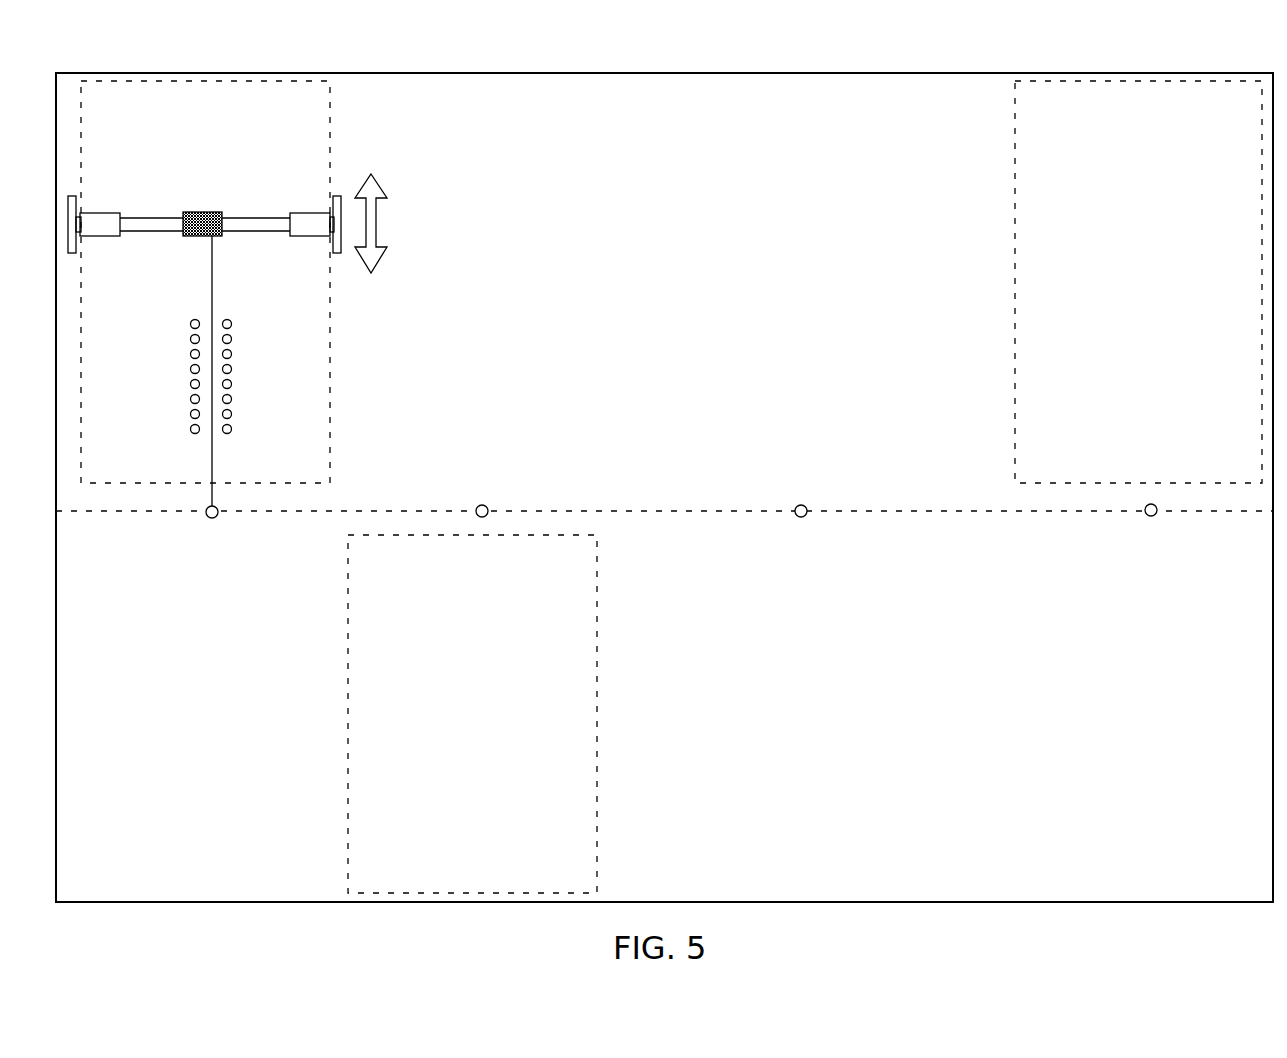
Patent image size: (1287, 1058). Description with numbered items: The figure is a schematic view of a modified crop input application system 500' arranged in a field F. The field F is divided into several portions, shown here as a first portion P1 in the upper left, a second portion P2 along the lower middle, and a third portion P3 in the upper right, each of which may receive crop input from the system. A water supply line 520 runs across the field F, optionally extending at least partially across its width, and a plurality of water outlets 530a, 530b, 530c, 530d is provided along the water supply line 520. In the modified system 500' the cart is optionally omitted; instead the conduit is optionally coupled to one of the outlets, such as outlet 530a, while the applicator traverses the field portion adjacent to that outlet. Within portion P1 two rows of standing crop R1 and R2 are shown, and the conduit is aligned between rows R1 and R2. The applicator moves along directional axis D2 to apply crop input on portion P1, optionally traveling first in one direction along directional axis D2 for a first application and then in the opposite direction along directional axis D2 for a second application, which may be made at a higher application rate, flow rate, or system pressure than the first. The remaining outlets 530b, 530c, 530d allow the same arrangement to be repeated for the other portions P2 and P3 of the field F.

The modified system 500' is at (664, 470).
The field F is at (748, 73).
The first field portion P1 is at (337, 405).
The second field portion P2 is at (607, 580).
The third field portion P3 is at (1013, 342).
The water supply line 520 is at (965, 515).
The water outlet 530a is at (213, 518).
The water outlet 530b is at (482, 505).
The water outlet 530c is at (801, 517).
The water outlet 530d is at (1151, 516).
The directional axis D2 is at (383, 223).
The first row of standing crop R1 is at (178, 384).
The second row of standing crop R2 is at (247, 382).